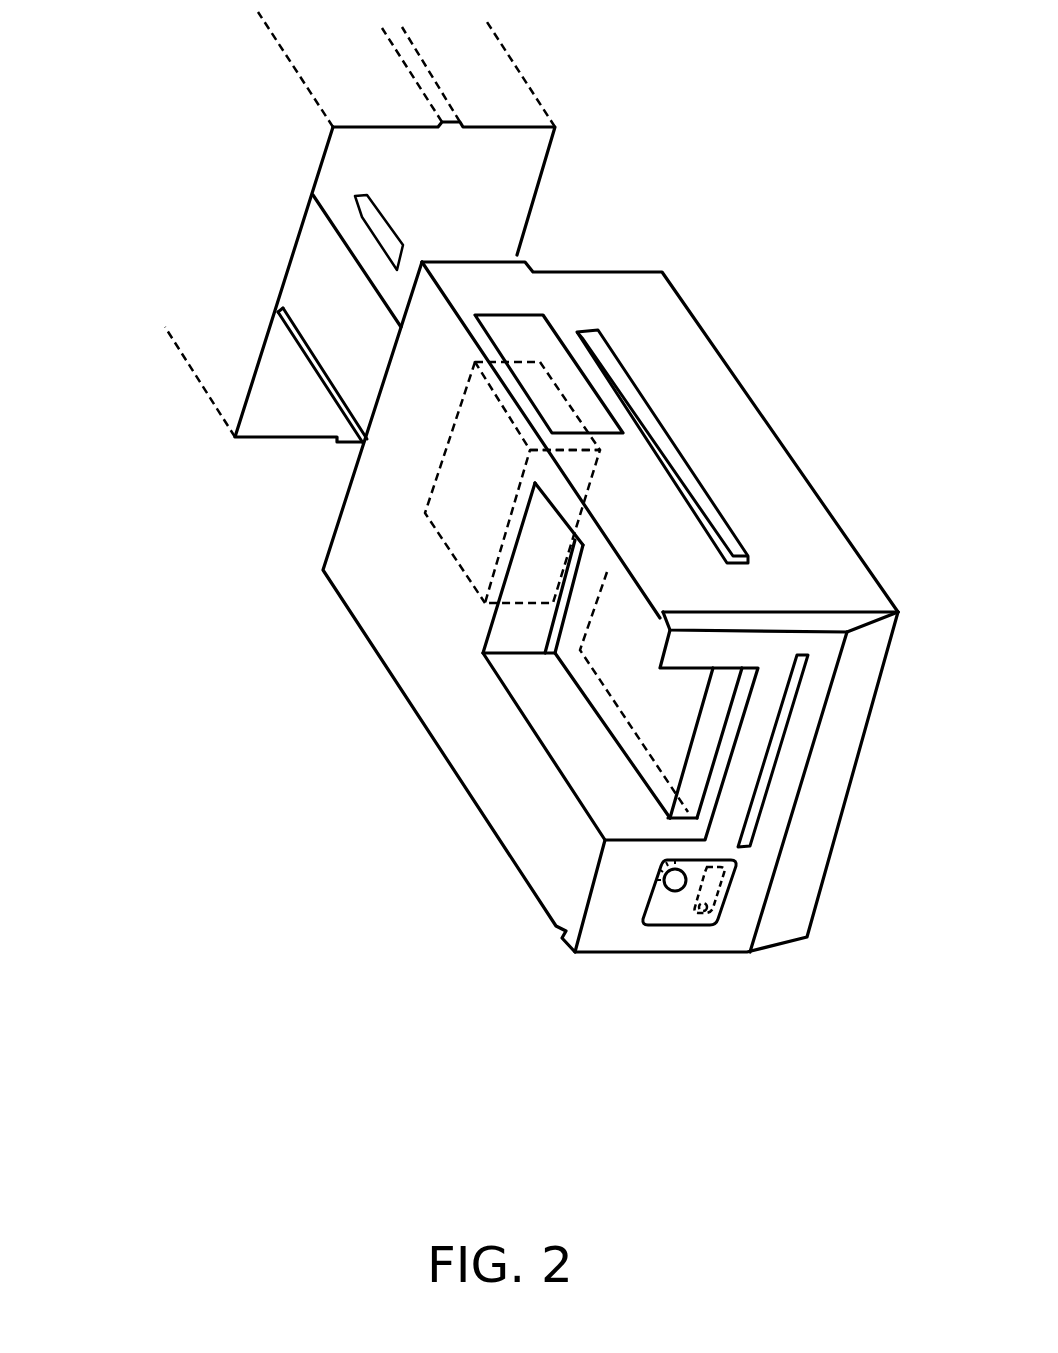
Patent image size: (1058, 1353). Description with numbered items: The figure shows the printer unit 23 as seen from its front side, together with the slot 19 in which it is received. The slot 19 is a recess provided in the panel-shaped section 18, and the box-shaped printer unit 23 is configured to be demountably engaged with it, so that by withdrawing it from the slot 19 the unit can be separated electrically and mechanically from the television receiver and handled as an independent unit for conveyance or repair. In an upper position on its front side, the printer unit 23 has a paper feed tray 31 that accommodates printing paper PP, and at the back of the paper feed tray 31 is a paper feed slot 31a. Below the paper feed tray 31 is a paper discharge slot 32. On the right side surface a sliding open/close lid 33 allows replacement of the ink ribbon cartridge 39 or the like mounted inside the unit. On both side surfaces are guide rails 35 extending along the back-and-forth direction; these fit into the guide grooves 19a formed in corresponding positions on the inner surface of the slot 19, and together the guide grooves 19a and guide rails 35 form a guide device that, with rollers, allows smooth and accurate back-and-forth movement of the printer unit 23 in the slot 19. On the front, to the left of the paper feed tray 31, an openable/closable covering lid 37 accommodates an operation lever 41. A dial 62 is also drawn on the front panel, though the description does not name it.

The panel-shaped section 18 is at (186, 410).
The slot 19 is at (513, 128).
The guide grooves 19a is at (323, 402).
The printer unit 23 is at (342, 630).
The paper feed tray 31 is at (607, 783).
The paper feed slot 31a is at (580, 650).
The paper discharge slot 32 is at (792, 697).
The sliding open/close lid 33 is at (540, 333).
The guide rails 35 is at (680, 467).
The covering lid 37 is at (667, 930).
The ink ribbon cartridge 39 is at (425, 513).
The operation lever 41 is at (728, 910).
The dial 62 is at (657, 875).
The printing paper PP is at (620, 730).